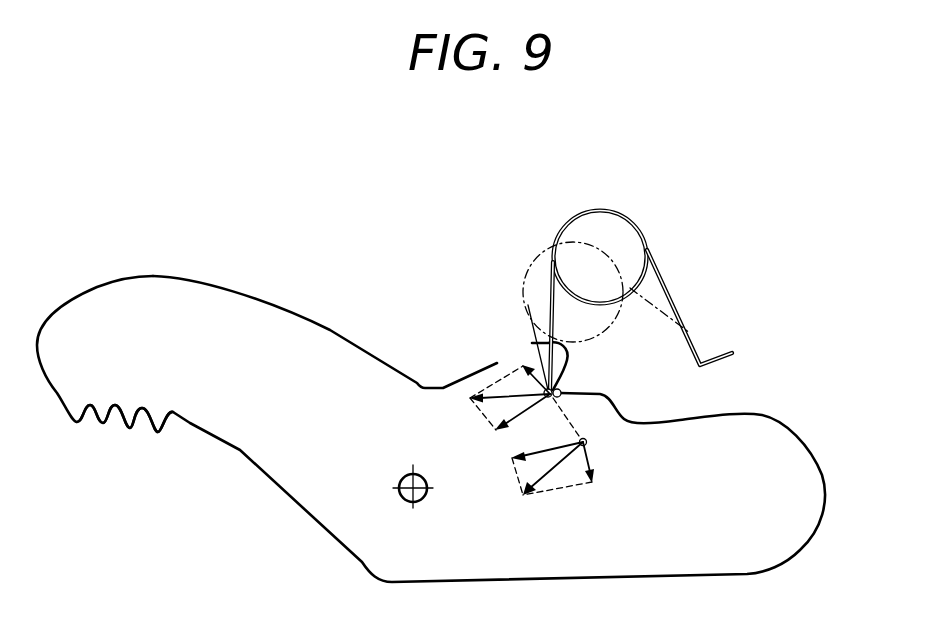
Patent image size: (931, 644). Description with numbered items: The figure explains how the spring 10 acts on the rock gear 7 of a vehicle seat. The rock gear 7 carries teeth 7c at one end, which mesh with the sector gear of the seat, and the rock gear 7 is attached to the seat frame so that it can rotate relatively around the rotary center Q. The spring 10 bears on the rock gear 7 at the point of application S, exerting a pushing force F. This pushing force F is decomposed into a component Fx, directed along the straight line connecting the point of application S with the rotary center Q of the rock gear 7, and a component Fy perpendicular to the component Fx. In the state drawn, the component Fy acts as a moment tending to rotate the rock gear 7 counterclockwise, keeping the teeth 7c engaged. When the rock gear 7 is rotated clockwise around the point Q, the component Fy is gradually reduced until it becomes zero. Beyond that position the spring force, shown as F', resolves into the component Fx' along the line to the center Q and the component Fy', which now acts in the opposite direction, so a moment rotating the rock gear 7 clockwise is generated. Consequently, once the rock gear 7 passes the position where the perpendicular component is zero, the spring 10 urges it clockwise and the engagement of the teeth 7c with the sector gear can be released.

The rock gear 7 is at (798, 432).
The teeth 7c is at (133, 430).
The spring 10 is at (537, 258).
The point of application S is at (560, 389).
The rotary center Q is at (405, 503).
The pushing force F is at (499, 398).
The component Fx is at (486, 438).
The component Fy is at (525, 364).
The pushing force after rotation F' is at (545, 484).
The component Fx' is at (505, 468).
The component Fy' is at (568, 479).